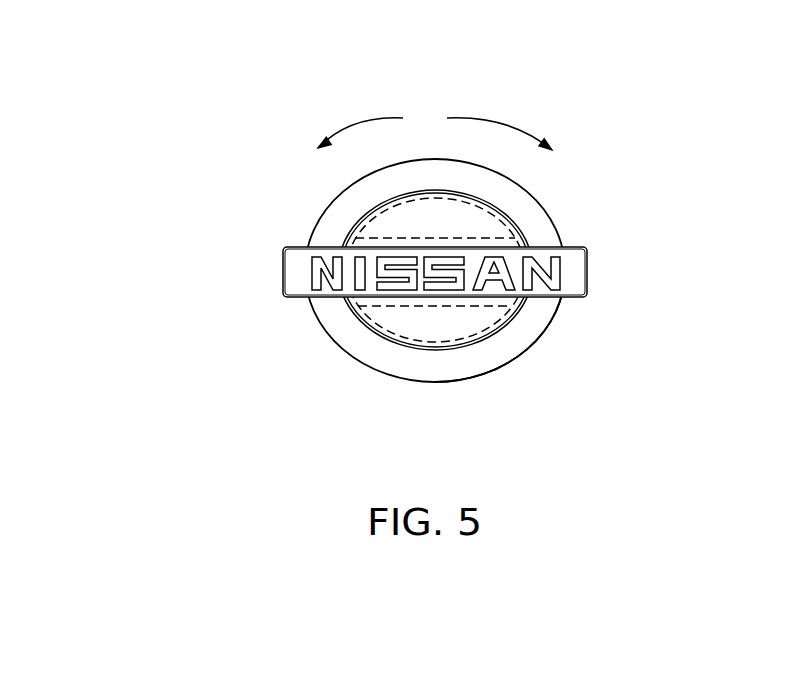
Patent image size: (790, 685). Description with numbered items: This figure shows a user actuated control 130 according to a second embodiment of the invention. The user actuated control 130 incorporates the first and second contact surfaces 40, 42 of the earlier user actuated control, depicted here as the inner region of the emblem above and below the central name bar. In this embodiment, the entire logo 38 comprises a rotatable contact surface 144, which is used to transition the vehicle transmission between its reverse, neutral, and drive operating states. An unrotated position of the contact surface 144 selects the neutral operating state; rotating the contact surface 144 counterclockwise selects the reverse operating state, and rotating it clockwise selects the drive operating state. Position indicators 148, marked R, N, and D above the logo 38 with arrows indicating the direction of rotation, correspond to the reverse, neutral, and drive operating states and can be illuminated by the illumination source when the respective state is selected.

The user actuated control 130 is at (122, 132).
The logo 38 is at (558, 229).
The rotatable contact surface 144 is at (557, 318).
The second contact surface 42 is at (357, 224).
The first contact surface 40 is at (364, 330).
The position indicators 148 is at (430, 95).